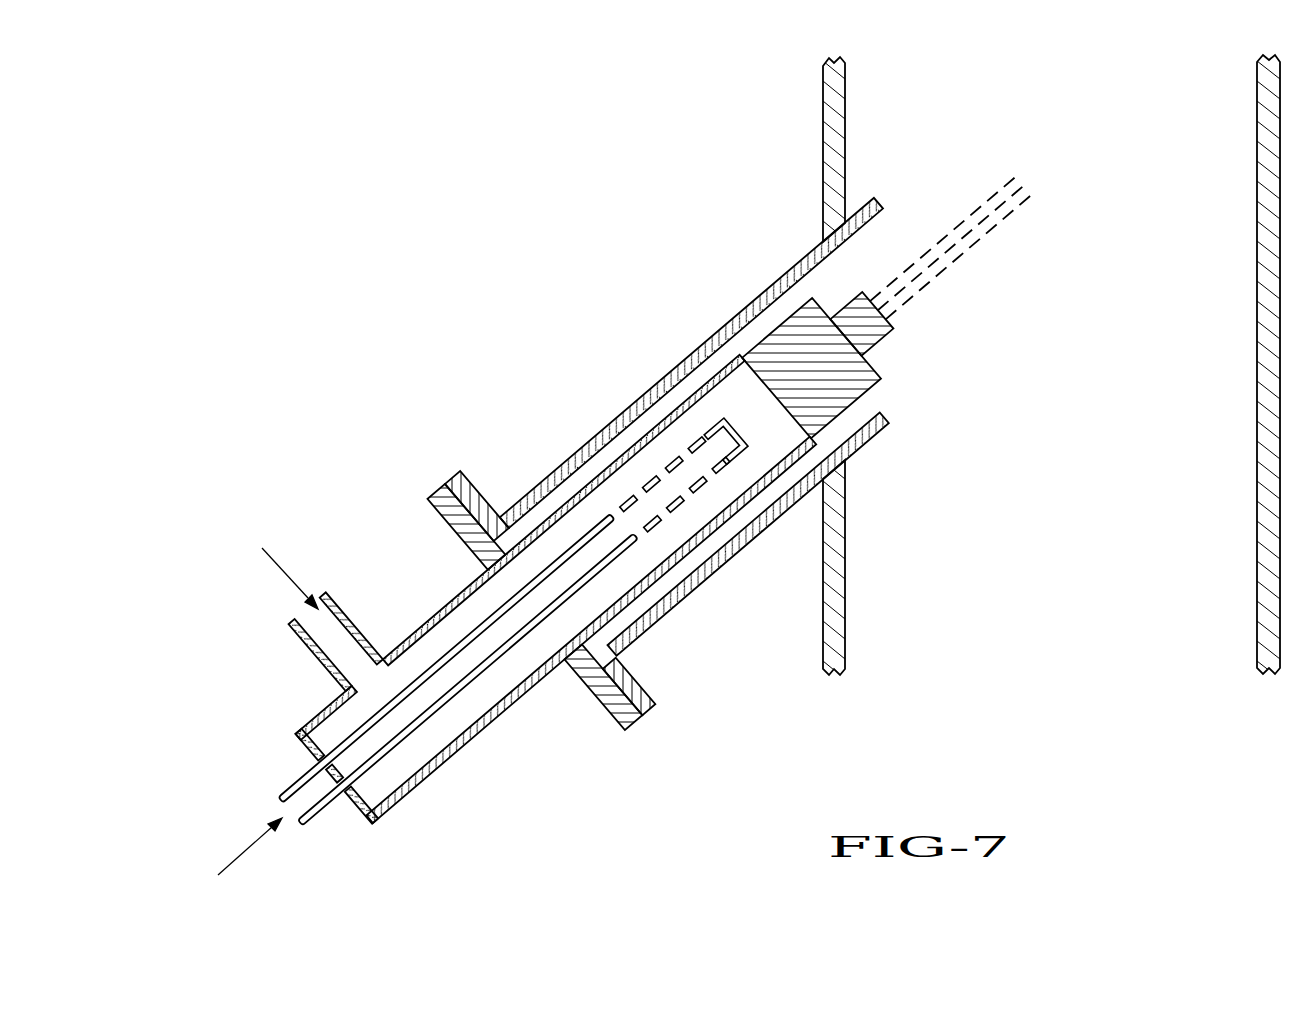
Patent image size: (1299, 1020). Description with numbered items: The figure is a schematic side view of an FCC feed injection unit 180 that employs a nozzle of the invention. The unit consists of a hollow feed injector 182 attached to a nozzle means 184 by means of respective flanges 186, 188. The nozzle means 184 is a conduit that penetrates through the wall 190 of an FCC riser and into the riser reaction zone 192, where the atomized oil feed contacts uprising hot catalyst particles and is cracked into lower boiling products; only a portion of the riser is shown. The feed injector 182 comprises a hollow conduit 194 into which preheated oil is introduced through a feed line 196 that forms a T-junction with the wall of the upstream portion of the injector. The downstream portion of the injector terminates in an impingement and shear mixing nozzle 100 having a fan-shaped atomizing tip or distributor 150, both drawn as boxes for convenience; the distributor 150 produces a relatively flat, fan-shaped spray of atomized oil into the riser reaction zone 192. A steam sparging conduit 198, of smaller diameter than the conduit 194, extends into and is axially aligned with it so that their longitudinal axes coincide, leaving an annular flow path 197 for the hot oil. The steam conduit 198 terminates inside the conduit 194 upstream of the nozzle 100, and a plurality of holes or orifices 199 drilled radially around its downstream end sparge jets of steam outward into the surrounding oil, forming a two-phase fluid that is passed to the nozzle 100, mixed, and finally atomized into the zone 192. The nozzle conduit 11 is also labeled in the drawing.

The outer tube 11 is at (718, 330).
The impingement and shear mixing nozzle 100 is at (880, 392).
The fan-shaped atomizing tip or distributor 150 is at (883, 330).
The FCC feed injection unit 180 is at (405, 335).
The hollow feed injector 182 is at (552, 820).
The nozzle means 184 is at (636, 262).
The flange 186 is at (450, 523).
The flange 188 is at (468, 482).
The wall of FCC riser 190 is at (840, 130).
The riser reaction zone 192 is at (1083, 124).
The hollow conduit 194 is at (402, 787).
The feed line 196 is at (320, 648).
The annular flow path 197 is at (508, 676).
The steam sparging conduit 198 is at (316, 825).
The holes or orifices 199 is at (655, 478).